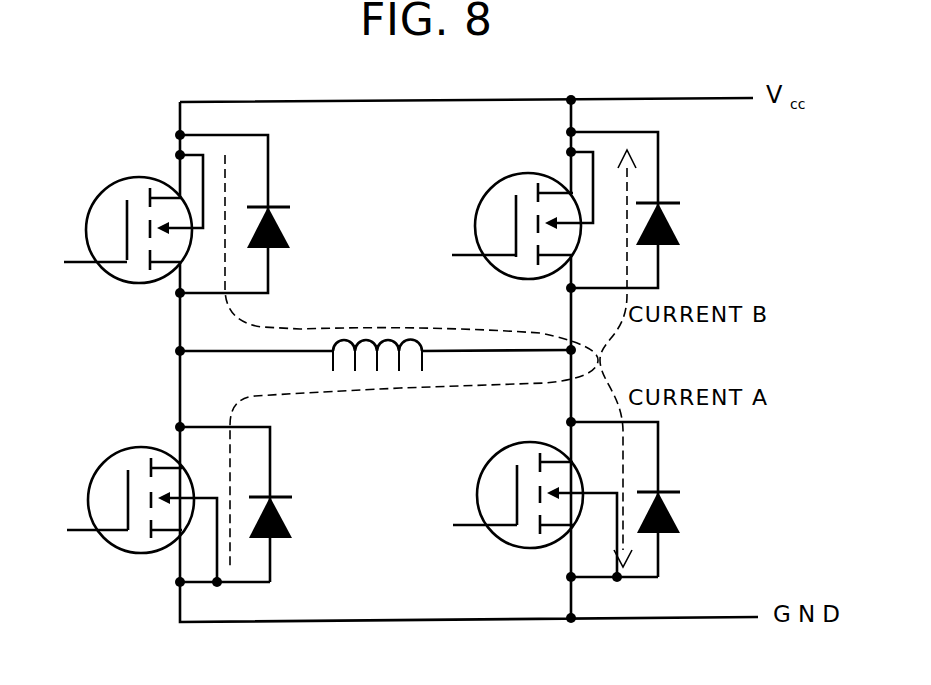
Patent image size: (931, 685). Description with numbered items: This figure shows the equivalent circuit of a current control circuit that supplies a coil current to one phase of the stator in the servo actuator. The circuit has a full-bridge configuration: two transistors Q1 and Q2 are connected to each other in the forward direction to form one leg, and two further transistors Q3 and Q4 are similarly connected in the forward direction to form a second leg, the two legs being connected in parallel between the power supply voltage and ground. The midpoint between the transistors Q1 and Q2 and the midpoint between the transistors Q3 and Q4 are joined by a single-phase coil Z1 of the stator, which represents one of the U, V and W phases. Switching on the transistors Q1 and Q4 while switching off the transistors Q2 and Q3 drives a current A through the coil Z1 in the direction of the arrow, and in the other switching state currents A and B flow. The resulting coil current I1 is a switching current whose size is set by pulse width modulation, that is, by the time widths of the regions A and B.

The transistor Q1 is at (169, 214).
The transistor Q2 is at (171, 504).
The transistor Q3 is at (558, 210).
The transistor Q4 is at (560, 499).
The single-phase coil Z1 is at (385, 385).
The switching current I1 is at (411, 362).